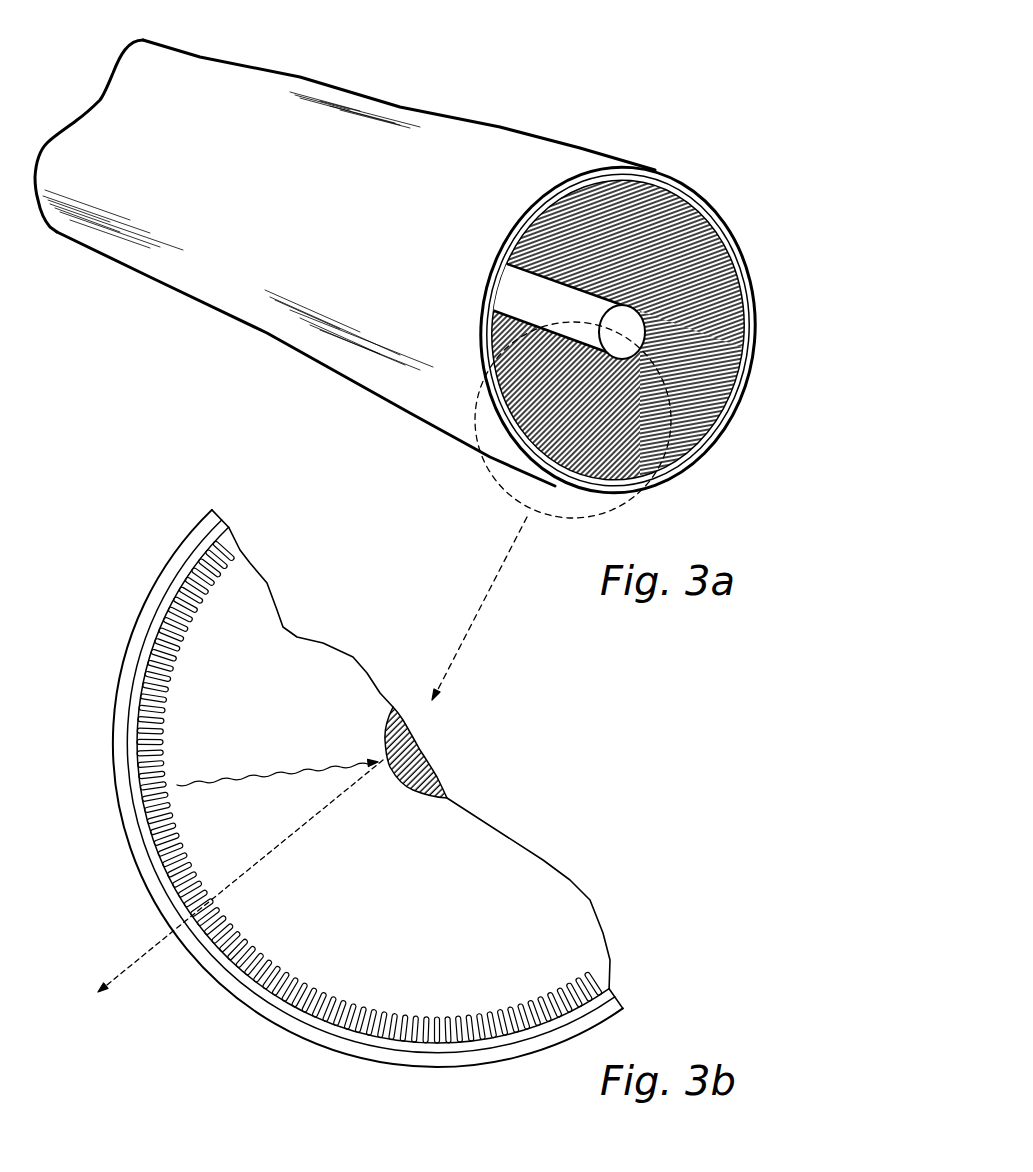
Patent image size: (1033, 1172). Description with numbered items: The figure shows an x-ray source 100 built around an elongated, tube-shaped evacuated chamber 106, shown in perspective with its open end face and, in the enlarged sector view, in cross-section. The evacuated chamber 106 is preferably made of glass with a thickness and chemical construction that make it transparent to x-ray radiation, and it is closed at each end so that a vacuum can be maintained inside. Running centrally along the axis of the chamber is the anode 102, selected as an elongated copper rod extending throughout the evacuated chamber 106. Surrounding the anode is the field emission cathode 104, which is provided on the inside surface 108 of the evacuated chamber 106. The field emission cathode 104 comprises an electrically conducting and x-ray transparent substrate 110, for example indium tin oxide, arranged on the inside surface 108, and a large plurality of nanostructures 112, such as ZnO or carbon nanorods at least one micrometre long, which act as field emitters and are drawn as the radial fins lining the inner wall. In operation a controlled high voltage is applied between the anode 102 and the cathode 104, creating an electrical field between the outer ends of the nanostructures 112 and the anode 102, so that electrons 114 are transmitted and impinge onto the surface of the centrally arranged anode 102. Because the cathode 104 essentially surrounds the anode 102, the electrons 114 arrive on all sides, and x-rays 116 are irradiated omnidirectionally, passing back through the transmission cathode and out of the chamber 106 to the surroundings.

In FIG. 3A, the x-ray source 100 is at (684, 74).
In FIG. 3A, the anode 102 is at (633, 332).
In FIG. 3B, the anode 102 is at (417, 755).
In FIG. 3A, the field emission cathode 104 is at (700, 397).
In FIG. 3B, the field emission cathode 104 is at (619, 980).
In FIG. 3A, the evacuated chamber 106 is at (590, 147).
In FIG. 3B, the evacuated chamber 106 is at (358, 1056).
In FIG. 3B, the inside surface 108 is at (487, 1047).
In FIG. 3B, the substrate 110 is at (587, 1010).
In FIG. 3B, the nanostructures 112 is at (607, 960).
In FIG. 3B, the electrons 114 is at (323, 763).
In FIG. 3B, the x-rays 116 is at (323, 809).